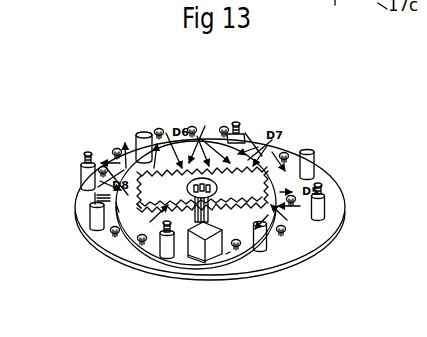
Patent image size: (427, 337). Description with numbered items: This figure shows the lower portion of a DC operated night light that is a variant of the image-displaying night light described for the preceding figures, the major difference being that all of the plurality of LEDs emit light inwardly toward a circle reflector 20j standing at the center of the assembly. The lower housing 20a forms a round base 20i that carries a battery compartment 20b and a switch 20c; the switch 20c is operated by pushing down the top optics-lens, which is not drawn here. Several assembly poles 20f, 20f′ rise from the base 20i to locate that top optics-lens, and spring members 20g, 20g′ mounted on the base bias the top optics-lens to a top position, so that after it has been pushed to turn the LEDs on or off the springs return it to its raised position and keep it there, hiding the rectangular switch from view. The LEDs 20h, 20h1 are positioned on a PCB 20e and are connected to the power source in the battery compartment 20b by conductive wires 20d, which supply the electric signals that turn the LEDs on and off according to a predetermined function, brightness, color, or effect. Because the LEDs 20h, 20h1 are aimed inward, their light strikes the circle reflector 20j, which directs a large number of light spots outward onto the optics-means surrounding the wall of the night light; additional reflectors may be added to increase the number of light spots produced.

The lower housing 20a is at (210, 250).
The battery compartment 20b is at (132, 212).
The switch 20c is at (219, 247).
The conductive wires 20d is at (198, 226).
The PCB 20e is at (220, 188).
The assembly pole 20f is at (262, 241).
The assembly pole 20f′ is at (316, 161).
The spring member 20g is at (328, 206).
The spring member 20g′ is at (242, 128).
The LED 20h is at (136, 209).
The LED 20h1 is at (106, 181).
The base 20i is at (263, 272).
The circle reflector 20j is at (247, 148).